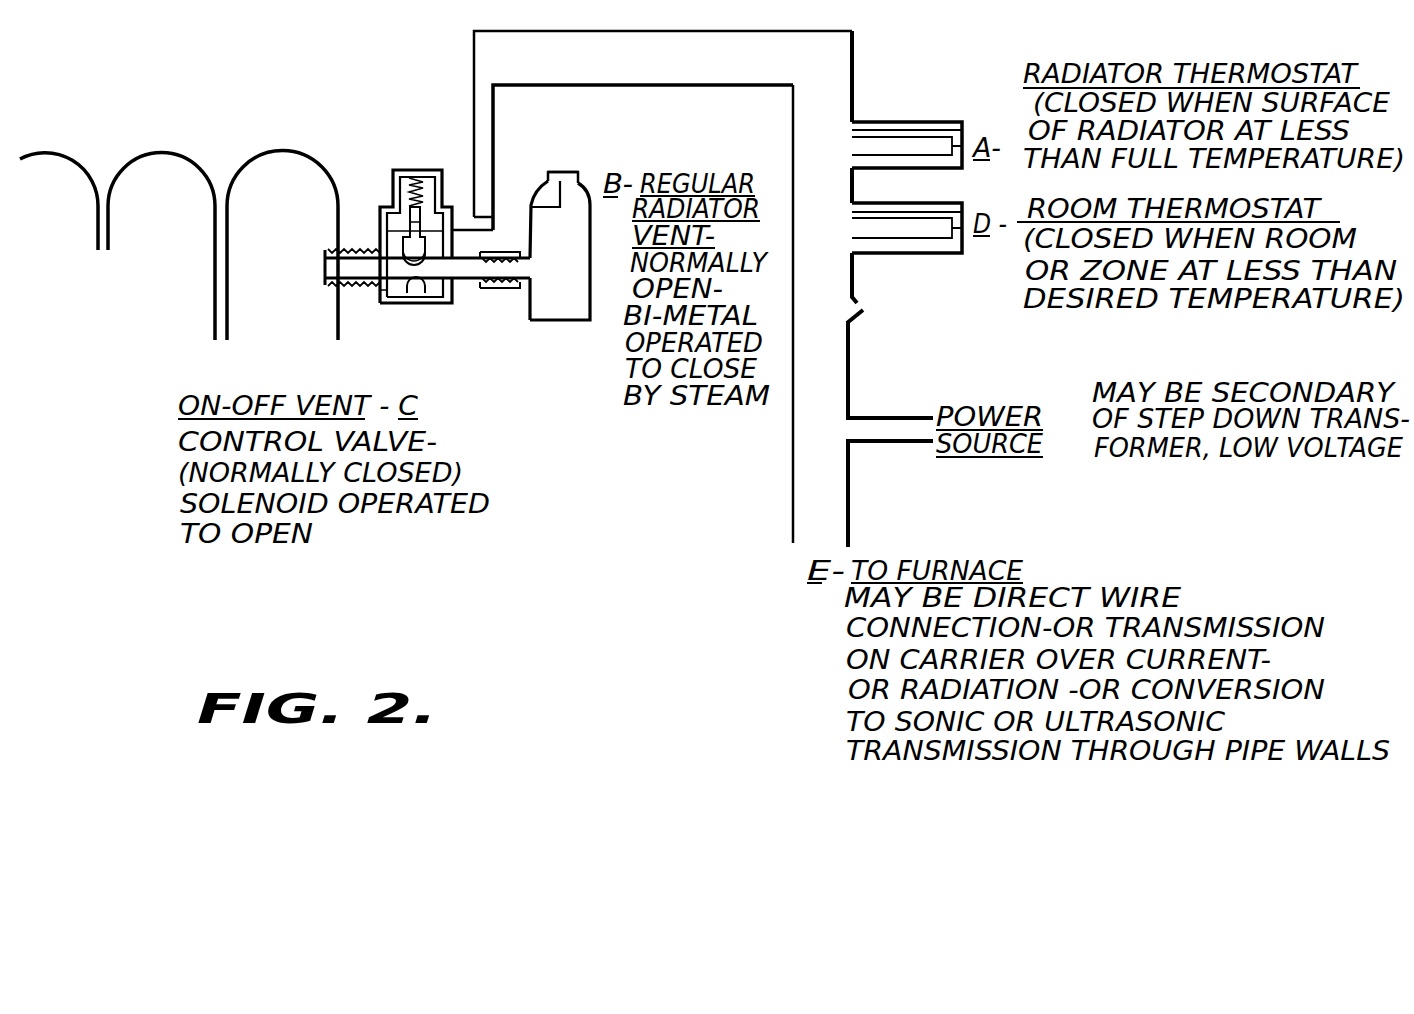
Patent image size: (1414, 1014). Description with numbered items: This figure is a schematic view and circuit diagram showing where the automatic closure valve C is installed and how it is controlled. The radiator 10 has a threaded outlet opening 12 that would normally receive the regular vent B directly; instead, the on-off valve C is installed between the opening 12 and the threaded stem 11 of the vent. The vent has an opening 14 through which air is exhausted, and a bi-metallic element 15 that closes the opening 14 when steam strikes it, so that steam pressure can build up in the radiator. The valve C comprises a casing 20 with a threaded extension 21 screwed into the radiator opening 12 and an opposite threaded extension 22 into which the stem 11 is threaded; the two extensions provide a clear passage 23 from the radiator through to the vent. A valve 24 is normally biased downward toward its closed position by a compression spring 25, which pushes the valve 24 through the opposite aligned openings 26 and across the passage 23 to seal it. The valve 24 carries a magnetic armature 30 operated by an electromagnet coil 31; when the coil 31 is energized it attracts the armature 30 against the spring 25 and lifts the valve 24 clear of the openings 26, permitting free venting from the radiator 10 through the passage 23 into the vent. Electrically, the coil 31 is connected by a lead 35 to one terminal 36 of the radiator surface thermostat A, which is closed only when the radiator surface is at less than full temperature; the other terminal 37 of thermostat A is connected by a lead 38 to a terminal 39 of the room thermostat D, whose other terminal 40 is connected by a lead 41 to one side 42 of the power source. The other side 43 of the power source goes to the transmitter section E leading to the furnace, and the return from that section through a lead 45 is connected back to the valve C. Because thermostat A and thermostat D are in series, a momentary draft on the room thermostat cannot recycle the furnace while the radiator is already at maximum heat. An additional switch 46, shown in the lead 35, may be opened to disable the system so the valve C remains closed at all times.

The radiator 10 is at (291, 151).
The threaded stem 11 is at (525, 290).
The threaded outlet opening 12 is at (325, 265).
The opening 14 is at (576, 176).
The bi-metallic element 15 is at (549, 178).
The casing 20 is at (401, 306).
The threaded extension 21 is at (376, 292).
The threaded extension 22 is at (485, 254).
The clear passage 23 is at (459, 267).
The valve 24 is at (426, 258).
The compression spring 25 is at (407, 176).
The aligned openings 26 is at (425, 286).
The magnetic armature 30 is at (408, 221).
The electromagnet coil 31 is at (415, 216).
The lead 35 is at (700, 31).
The terminal 36 is at (853, 122).
The radiator thermostat lower contact 37 is at (857, 168).
The lead 38 is at (852, 204).
The terminal 39 is at (851, 223).
The terminal 40 is at (855, 254).
The lead 41 is at (853, 357).
The side of power source 42 is at (880, 416).
The side of power source 43 is at (878, 443).
The lead 45 is at (789, 472).
The switch 46 is at (862, 305).